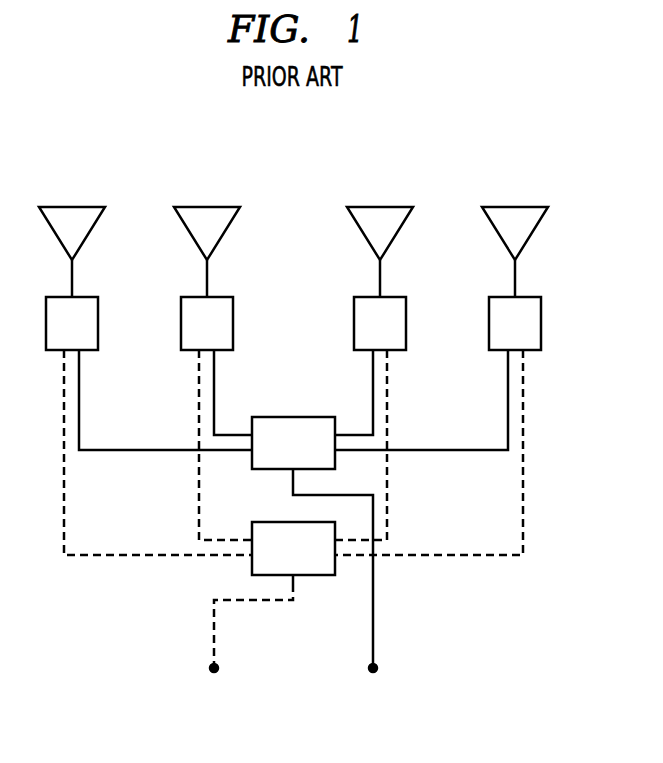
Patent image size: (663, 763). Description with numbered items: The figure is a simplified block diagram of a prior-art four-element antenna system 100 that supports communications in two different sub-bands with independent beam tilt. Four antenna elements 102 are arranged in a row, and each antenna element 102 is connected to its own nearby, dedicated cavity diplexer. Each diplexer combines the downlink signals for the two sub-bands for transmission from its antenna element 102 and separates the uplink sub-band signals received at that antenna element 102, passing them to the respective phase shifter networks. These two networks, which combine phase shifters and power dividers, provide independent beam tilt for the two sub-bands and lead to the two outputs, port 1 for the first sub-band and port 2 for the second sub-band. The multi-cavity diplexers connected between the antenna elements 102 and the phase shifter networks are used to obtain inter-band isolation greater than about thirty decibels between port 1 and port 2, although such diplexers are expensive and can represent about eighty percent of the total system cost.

The four-element antenna system 100 is at (276, 130).
The antenna element 102 is at (73, 206).
The port 1 is at (222, 659).
The port 2 is at (365, 606).